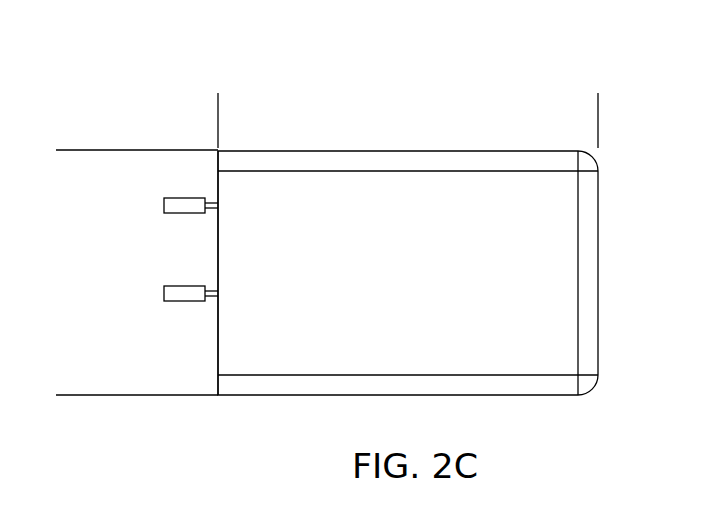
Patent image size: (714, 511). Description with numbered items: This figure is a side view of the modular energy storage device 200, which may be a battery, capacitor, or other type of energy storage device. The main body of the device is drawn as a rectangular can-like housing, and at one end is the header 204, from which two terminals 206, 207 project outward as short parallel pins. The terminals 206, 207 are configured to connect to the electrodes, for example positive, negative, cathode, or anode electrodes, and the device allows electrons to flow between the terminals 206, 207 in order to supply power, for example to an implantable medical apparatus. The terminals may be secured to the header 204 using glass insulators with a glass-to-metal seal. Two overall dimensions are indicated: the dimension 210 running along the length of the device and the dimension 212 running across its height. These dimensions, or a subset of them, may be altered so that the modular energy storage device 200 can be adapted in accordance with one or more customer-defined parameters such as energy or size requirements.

The modular energy storage device 200 is at (99, 84).
The header 204 is at (206, 379).
The terminal 206 is at (156, 224).
The terminal 207 is at (158, 308).
The dimension 210 is at (598, 95).
The dimension 212 is at (56, 150).